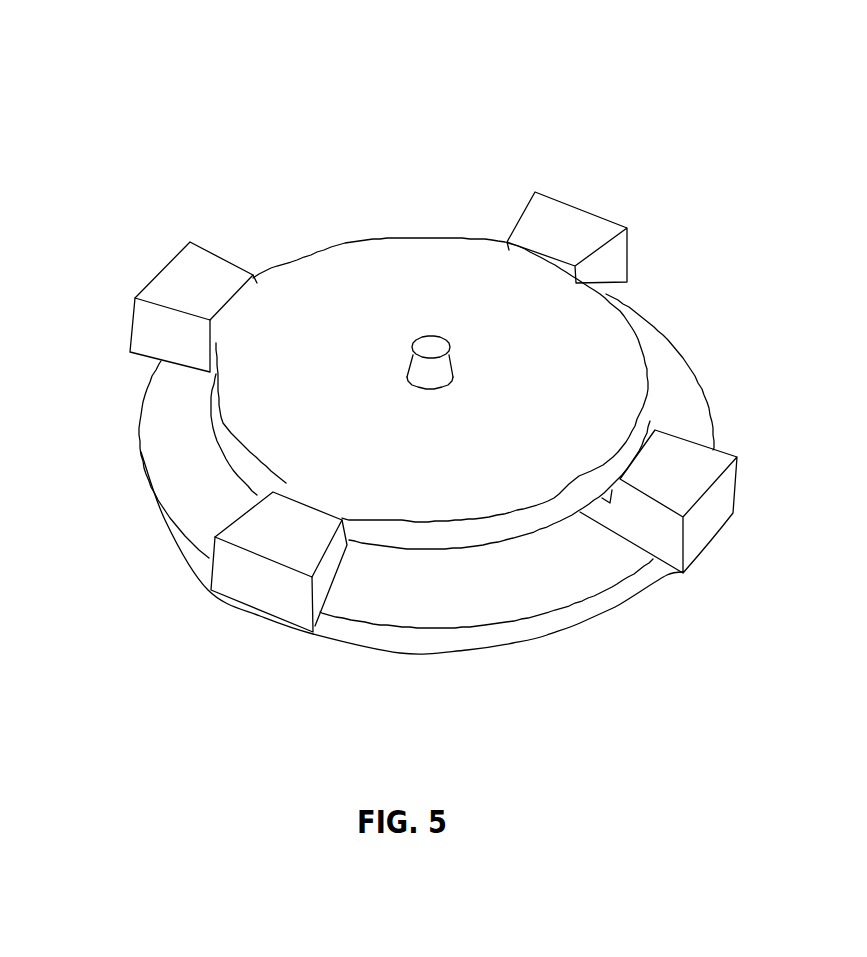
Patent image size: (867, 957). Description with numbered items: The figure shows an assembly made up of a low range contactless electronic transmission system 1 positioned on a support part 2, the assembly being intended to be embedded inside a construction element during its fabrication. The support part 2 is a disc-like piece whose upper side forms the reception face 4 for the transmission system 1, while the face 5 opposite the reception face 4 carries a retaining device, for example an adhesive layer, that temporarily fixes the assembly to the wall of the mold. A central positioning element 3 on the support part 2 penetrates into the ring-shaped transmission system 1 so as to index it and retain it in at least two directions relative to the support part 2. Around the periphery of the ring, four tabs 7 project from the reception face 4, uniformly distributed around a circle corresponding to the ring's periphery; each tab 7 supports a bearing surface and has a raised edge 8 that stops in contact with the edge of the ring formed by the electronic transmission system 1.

The low range contactless electronic transmission system 1 is at (347, 282).
The support part 2 is at (407, 664).
The positioning element 3 is at (432, 347).
The reception face 4 is at (673, 395).
The face opposite the reception face 5 is at (325, 635).
The tab 7 is at (190, 275).
The raised edge 8 is at (230, 308).